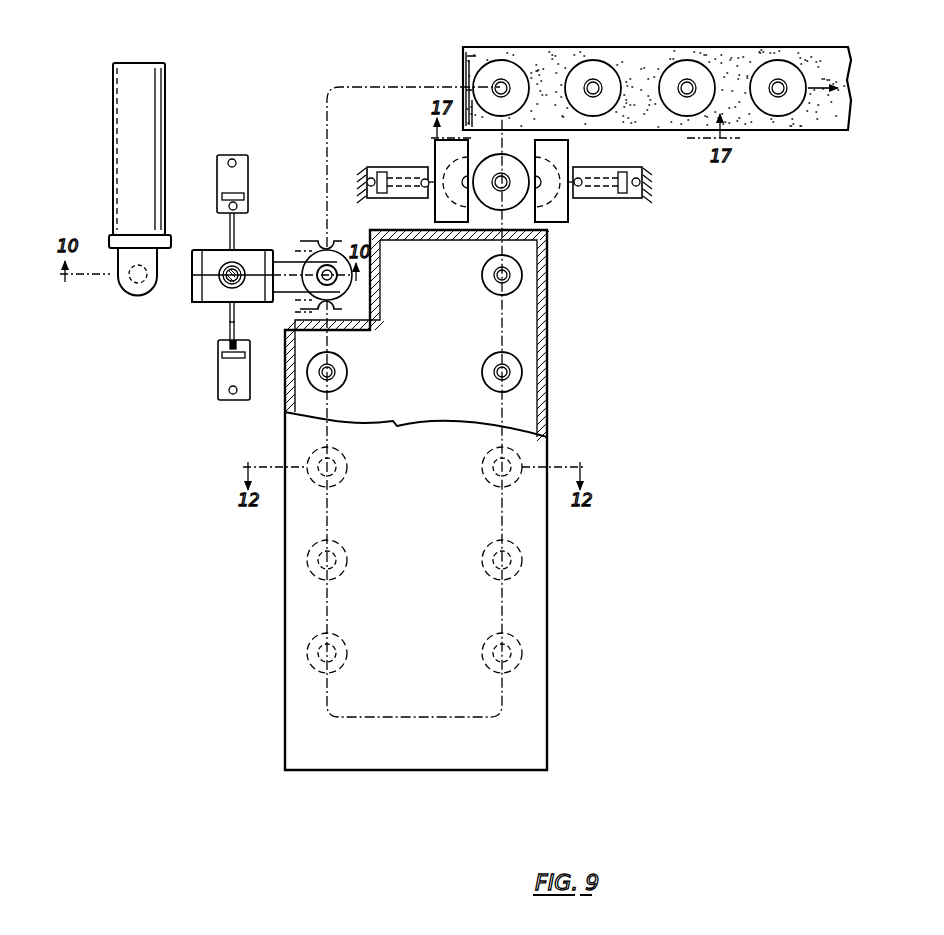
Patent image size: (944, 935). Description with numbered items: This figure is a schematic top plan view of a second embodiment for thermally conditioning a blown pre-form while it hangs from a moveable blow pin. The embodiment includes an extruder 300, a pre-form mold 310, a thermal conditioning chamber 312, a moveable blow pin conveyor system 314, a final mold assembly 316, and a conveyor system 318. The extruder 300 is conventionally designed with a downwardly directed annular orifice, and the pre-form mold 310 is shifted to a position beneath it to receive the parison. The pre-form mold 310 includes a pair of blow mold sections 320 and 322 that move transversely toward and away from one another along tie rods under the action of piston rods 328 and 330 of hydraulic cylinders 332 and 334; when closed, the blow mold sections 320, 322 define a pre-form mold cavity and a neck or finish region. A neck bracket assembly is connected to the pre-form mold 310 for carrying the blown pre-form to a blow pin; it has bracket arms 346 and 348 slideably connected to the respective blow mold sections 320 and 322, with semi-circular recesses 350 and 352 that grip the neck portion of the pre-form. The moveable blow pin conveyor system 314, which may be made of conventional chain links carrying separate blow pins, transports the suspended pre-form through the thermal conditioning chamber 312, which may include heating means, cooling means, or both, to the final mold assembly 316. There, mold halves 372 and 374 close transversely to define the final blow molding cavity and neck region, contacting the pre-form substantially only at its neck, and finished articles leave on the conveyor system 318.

The extruder 300 is at (104, 150).
The pre-form mold 310 is at (186, 339).
The thermal conditioning chamber 312 is at (564, 578).
The moveable blow pin conveyor system 314 is at (334, 80).
The final mold assembly 316 is at (588, 214).
The conveyor system 318 is at (629, 36).
The blow mold section 320 is at (250, 258).
The blow mold section 322 is at (205, 298).
The piston rod 328 is at (230, 325).
The piston rod 330 is at (230, 227).
The hydraulic cylinder 332 is at (222, 383).
The hydraulic cylinder 334 is at (240, 155).
The bracket arm 346 is at (339, 263).
The bracket arm 348 is at (344, 283).
The semi-circular recess 350 is at (320, 242).
The semi-circular recess 352 is at (344, 305).
The mold half 372 is at (558, 152).
The mold half 374 is at (437, 151).